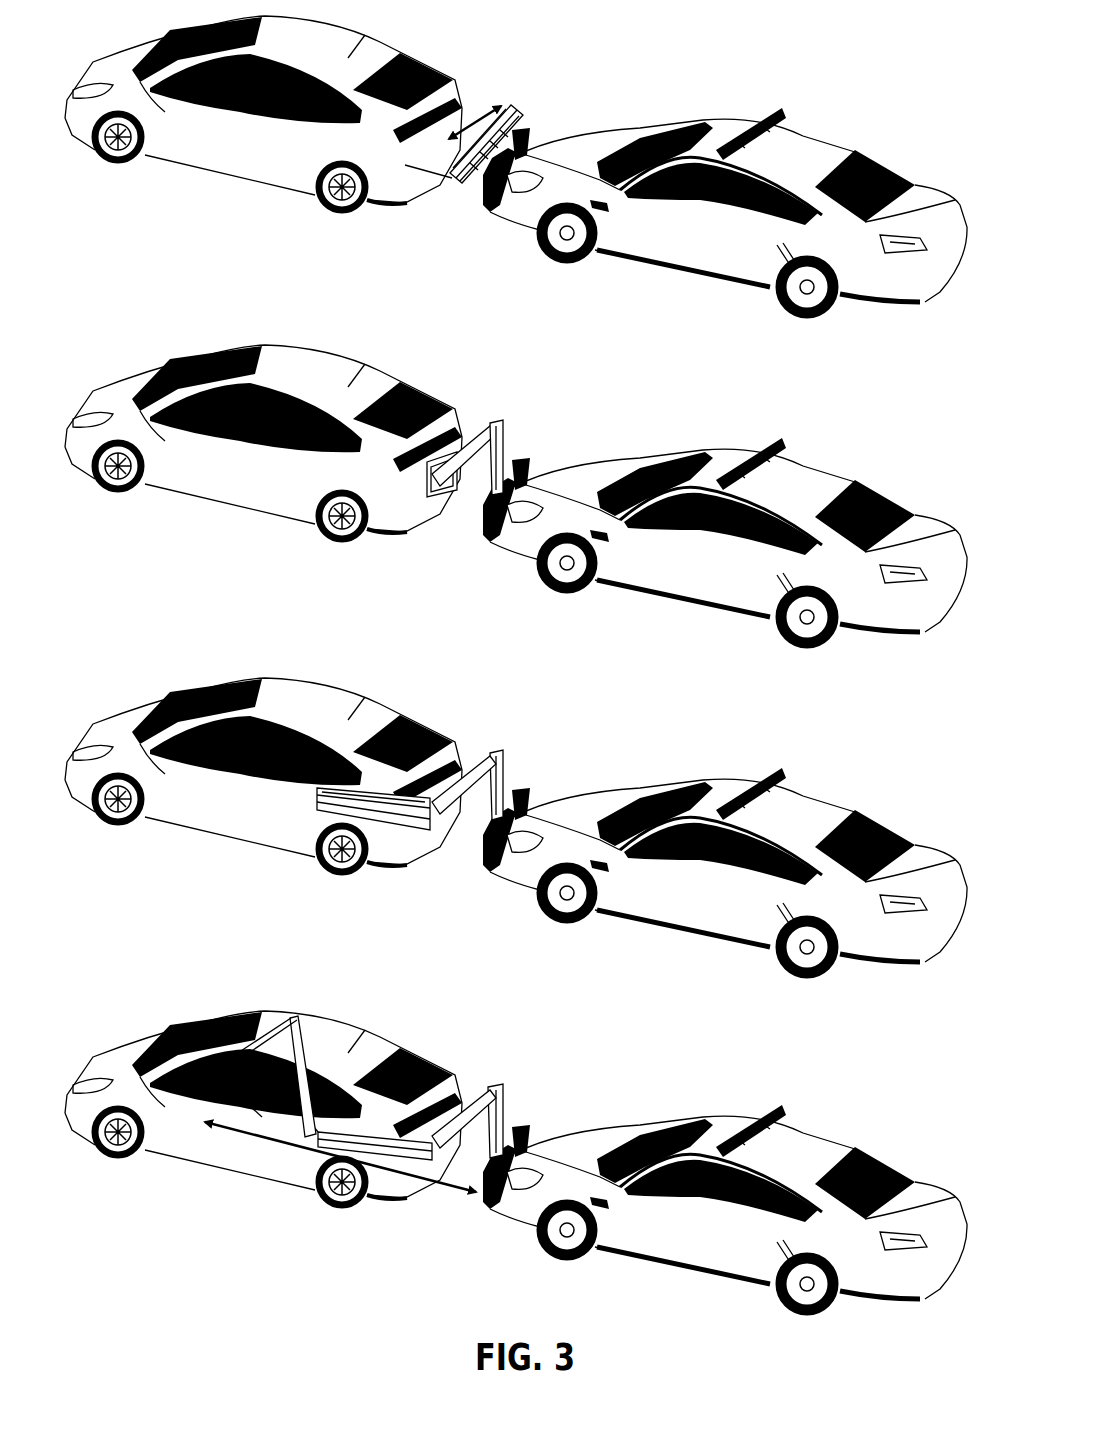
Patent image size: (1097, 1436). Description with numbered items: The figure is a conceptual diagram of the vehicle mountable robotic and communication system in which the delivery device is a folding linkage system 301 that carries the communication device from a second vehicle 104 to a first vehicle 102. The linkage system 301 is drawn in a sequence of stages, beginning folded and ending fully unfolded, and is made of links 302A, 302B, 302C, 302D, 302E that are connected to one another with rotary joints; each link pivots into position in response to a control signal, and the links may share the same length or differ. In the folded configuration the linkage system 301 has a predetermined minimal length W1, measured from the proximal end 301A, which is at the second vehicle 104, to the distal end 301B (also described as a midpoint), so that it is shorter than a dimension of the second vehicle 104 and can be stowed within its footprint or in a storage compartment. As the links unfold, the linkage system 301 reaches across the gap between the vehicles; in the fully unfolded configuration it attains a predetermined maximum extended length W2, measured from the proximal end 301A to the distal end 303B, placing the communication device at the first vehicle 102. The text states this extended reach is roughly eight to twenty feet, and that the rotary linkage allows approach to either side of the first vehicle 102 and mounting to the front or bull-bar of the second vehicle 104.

The first vehicle 102 is at (95, 78).
The second vehicle 104 is at (786, 144).
The linkage system 301 is at (479, 587).
The proximal end 301A is at (528, 133).
The distal end 301B is at (457, 189).
The width W1 is at (475, 110).
The maximum extended length W2 is at (340, 1172).
The link 302A is at (504, 1107).
The link 302B is at (455, 1112).
The link 302C is at (393, 1158).
The link 302D is at (298, 1098).
The link 302E is at (247, 1098).
The distal end 303B is at (203, 1098).